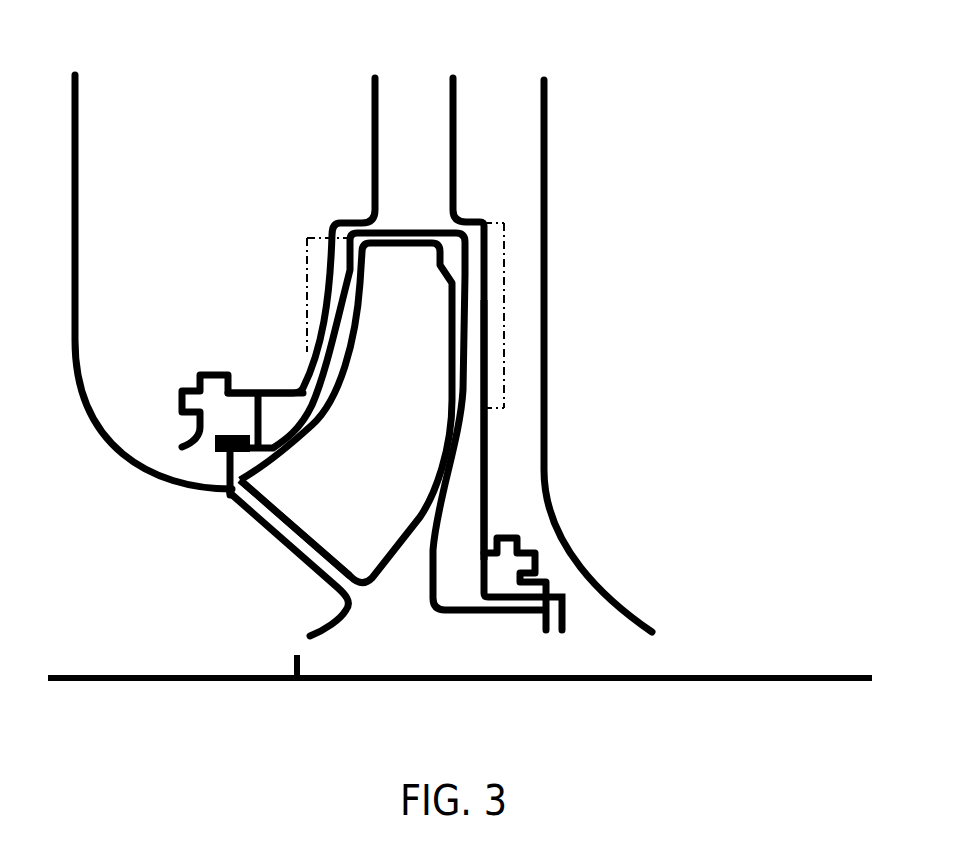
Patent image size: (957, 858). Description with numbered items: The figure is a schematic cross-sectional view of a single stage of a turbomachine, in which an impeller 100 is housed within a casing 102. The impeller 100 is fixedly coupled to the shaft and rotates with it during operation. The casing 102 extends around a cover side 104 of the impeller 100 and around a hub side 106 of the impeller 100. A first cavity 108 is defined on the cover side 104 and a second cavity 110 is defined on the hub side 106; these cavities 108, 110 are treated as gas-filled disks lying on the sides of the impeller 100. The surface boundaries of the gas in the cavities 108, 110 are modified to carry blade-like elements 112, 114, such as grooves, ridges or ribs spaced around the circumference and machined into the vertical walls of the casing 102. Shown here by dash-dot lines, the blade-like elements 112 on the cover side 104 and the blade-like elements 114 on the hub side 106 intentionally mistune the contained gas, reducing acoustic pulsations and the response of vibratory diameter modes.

The impeller 100 is at (275, 510).
The casing 102 is at (270, 98).
The cover side 104 is at (342, 226).
The hub side 106 is at (487, 440).
The first cavity 108 is at (280, 417).
The second cavity 110 is at (460, 507).
The blade-like elements 112 is at (318, 307).
The blade-like elements 114 is at (500, 312).